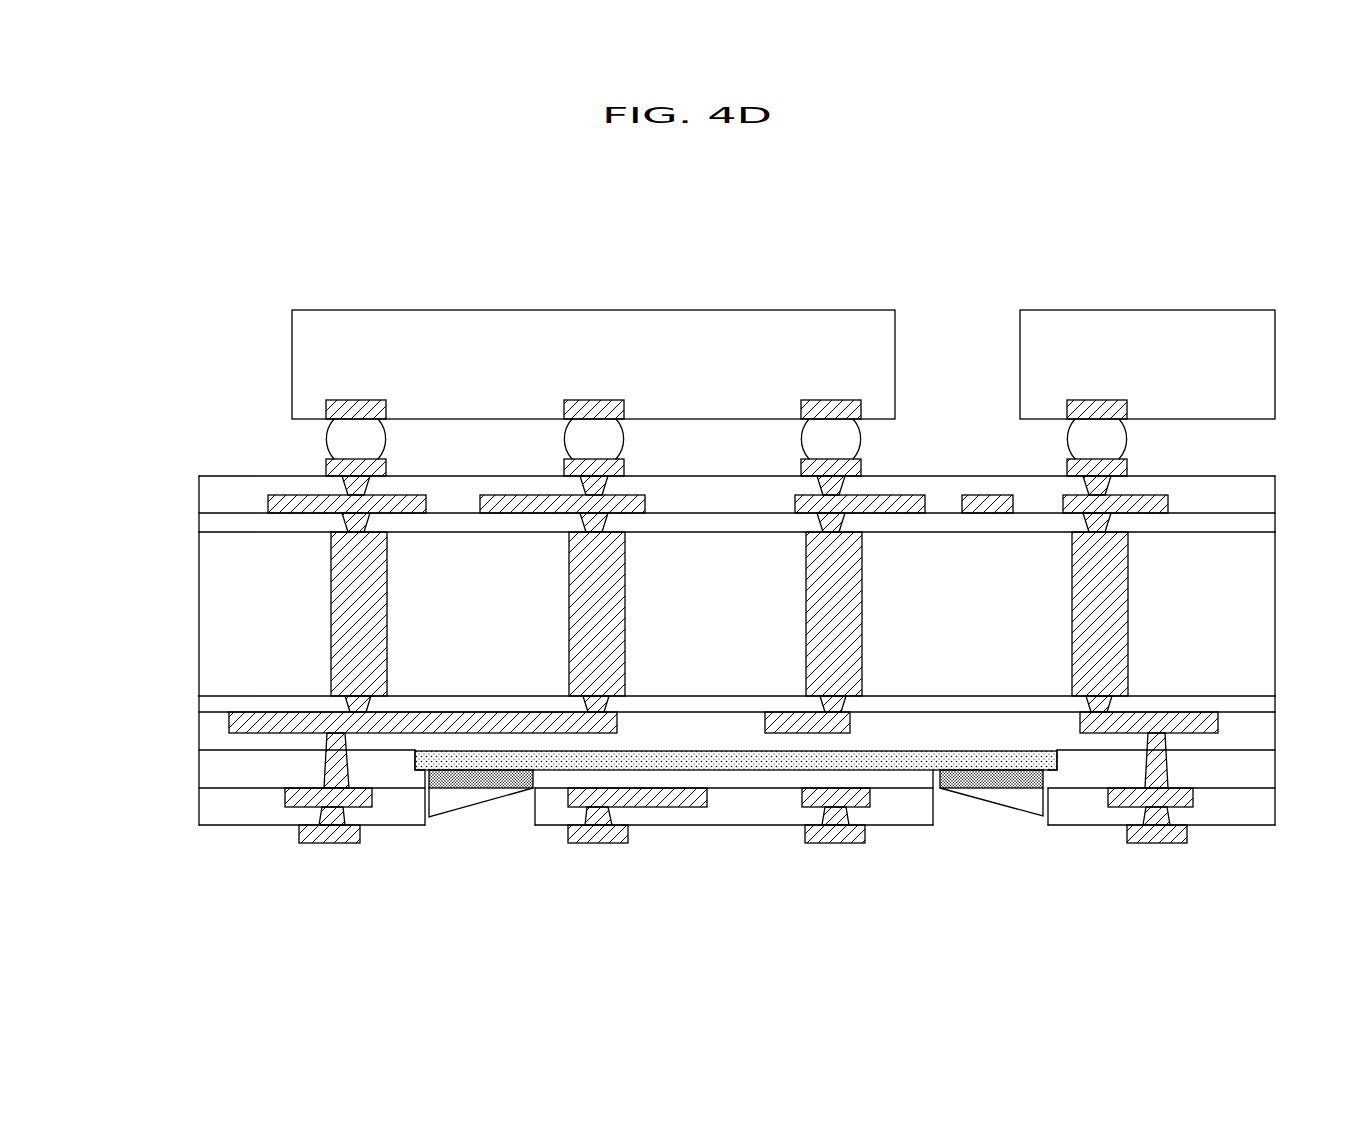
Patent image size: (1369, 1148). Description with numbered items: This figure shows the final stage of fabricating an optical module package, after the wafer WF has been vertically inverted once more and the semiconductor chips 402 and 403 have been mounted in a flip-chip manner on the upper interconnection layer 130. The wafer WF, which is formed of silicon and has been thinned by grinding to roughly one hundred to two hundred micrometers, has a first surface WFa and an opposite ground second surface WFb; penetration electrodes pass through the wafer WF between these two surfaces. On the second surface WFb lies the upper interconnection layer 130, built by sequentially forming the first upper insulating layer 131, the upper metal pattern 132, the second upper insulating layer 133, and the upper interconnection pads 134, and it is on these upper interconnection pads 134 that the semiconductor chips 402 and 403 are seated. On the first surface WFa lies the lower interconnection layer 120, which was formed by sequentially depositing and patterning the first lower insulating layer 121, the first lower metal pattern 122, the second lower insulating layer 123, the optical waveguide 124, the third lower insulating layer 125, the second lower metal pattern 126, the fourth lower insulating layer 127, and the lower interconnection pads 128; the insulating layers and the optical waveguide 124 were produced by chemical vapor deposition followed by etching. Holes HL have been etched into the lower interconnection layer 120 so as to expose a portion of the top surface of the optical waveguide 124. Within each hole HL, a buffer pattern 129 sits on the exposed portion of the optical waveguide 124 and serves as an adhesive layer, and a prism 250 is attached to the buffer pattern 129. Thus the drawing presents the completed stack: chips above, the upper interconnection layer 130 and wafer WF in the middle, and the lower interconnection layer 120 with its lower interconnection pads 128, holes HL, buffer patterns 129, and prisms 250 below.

The semiconductor chip 402 is at (305, 359).
The semiconductor chip 403 is at (1032, 359).
The upper interconnection pad 134 is at (337, 468).
The second upper insulating layer 133 is at (207, 490).
The upper metal pattern 132 is at (280, 499).
The first upper insulating layer 131 is at (207, 524).
The upper interconnection layer 130 is at (112, 470).
The wafer WF is at (207, 612).
The second surface WFb is at (1253, 530).
The first surface WFa is at (1253, 697).
The lower interconnection layer 120 is at (112, 672).
The first lower insulating layer 121 is at (207, 703).
The first lower metal pattern 122 is at (245, 722).
The second lower insulating layer 123 is at (207, 742).
The optical waveguide 124 is at (420, 760).
The third lower insulating layer 125 is at (210, 778).
The second lower metal pattern 126 is at (292, 793).
The fourth lower insulating layer 127 is at (207, 815).
The lower interconnection pad 128 is at (328, 833).
The hole HL is at (535, 808).
The buffer pattern 129 is at (968, 780).
The prism 250 is at (1025, 805).